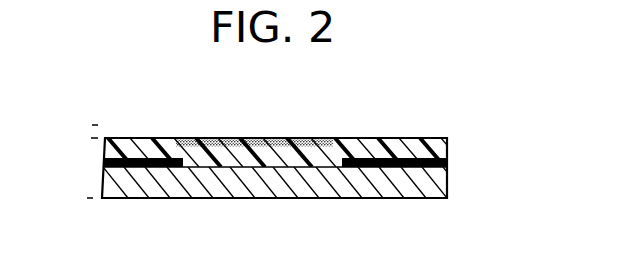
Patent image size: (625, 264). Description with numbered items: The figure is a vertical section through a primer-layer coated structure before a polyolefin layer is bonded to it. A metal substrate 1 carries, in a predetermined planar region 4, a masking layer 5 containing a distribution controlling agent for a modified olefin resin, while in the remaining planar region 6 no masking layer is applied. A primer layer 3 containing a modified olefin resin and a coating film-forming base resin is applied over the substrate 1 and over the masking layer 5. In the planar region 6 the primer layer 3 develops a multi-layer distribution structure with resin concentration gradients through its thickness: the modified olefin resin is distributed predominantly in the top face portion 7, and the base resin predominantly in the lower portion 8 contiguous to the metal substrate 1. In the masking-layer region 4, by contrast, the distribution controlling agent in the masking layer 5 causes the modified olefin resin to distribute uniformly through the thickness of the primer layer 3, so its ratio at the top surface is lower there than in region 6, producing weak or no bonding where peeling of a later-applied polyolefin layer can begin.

The metal substrate 1 is at (447, 188).
The primer layer 3 is at (447, 147).
The predetermined planar region 4 is at (178, 129).
The masking layer 5 is at (447, 162).
The remaining planar region 6 is at (335, 129).
The top face portion 7 is at (287, 141).
The lower portion 8 is at (290, 158).